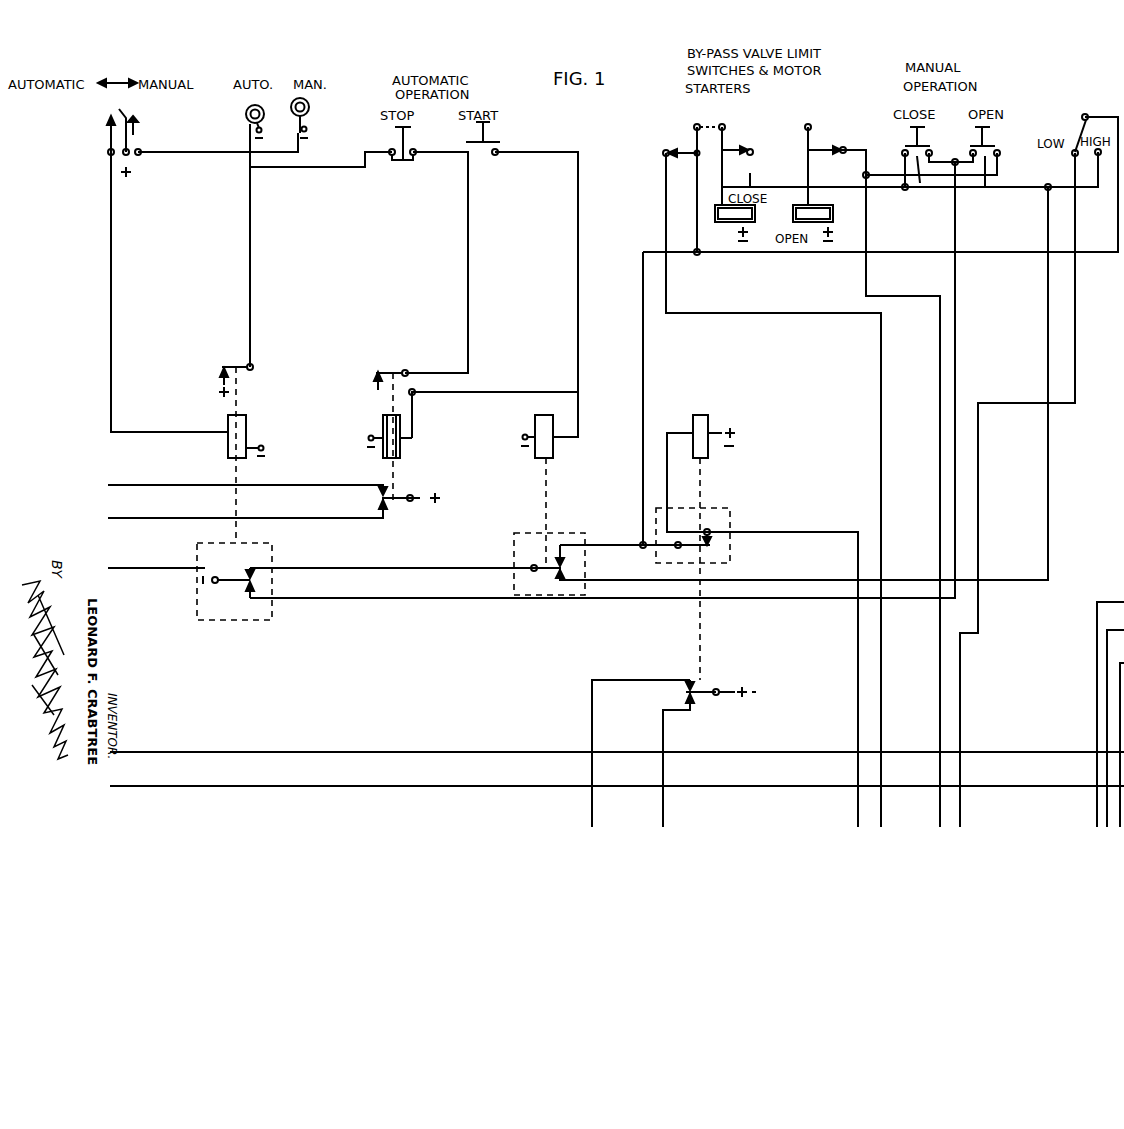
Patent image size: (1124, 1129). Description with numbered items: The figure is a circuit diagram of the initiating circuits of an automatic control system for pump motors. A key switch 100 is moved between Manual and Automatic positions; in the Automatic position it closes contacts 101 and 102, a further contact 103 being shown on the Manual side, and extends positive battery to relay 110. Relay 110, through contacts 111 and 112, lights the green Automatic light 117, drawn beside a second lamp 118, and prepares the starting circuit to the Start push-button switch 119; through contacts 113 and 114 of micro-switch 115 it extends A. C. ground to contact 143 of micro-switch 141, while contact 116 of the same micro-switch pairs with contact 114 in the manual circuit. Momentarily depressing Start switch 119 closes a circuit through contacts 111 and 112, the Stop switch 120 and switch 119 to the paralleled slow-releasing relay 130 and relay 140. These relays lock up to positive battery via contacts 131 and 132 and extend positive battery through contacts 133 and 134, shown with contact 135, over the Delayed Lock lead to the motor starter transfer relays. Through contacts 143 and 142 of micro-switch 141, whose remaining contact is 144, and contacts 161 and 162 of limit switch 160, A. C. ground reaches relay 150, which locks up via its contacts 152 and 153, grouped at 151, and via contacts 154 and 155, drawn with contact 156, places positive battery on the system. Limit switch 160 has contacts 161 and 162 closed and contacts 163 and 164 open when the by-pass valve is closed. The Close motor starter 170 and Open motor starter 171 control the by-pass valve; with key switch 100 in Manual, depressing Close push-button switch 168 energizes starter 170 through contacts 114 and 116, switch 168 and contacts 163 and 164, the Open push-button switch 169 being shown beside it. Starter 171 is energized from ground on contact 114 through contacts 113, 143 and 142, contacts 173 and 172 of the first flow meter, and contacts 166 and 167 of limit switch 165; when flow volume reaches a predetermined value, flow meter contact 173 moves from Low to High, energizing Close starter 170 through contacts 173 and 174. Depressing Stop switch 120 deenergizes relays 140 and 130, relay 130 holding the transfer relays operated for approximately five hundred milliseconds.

The key switch 100 is at (117, 81).
The contact 101 is at (107, 128).
The contact 102 is at (126, 113).
The manual contact 103 is at (135, 128).
The relay 110 is at (240, 430).
The contact 111 is at (217, 380).
The contact 112 is at (237, 358).
The contact 113 is at (255, 575).
The contact 114 is at (230, 578).
The micro-switch 115 is at (196, 569).
The contact 116 is at (246, 583).
The green light 117 is at (246, 116).
The manual indicator lamp 118 is at (283, 112).
The Start push-button switch 119 is at (497, 146).
The Stop push-button switch 120 is at (392, 145).
The slow-releasing relay 130 is at (383, 427).
The contact 131 is at (393, 371).
The contact 132 is at (374, 384).
The contact 133 is at (392, 507).
The contact 134 is at (382, 483).
The relay contact 135 is at (378, 500).
The relay 140 is at (535, 422).
The micro-switch 141 is at (513, 540).
The contact 142 is at (552, 562).
The contact 143 is at (530, 570).
The relay contact 144 is at (548, 582).
The relay 150 is at (693, 423).
The relay contact assembly 151 is at (712, 508).
The contact 152 is at (713, 540).
The contact 153 is at (712, 548).
The contact 154 is at (689, 678).
The contact 155 is at (703, 692).
The relay contact 156 is at (693, 698).
The limit switch 160 is at (709, 177).
The contact 161 is at (686, 150).
The contact 162 is at (663, 155).
The contact 163 is at (753, 172).
The contact 164 is at (745, 141).
The limit switch 165 is at (820, 117).
The contact 166 is at (844, 154).
The contact 167 is at (822, 146).
The Close push-button switch 168 is at (915, 169).
The open push button switch 169 is at (977, 169).
The Close motor starter 170 is at (716, 222).
The Open motor starter 171 is at (833, 213).
The contact 172 is at (1072, 156).
The first flow meter contact 173 is at (1083, 123).
The contact 174 is at (1102, 160).